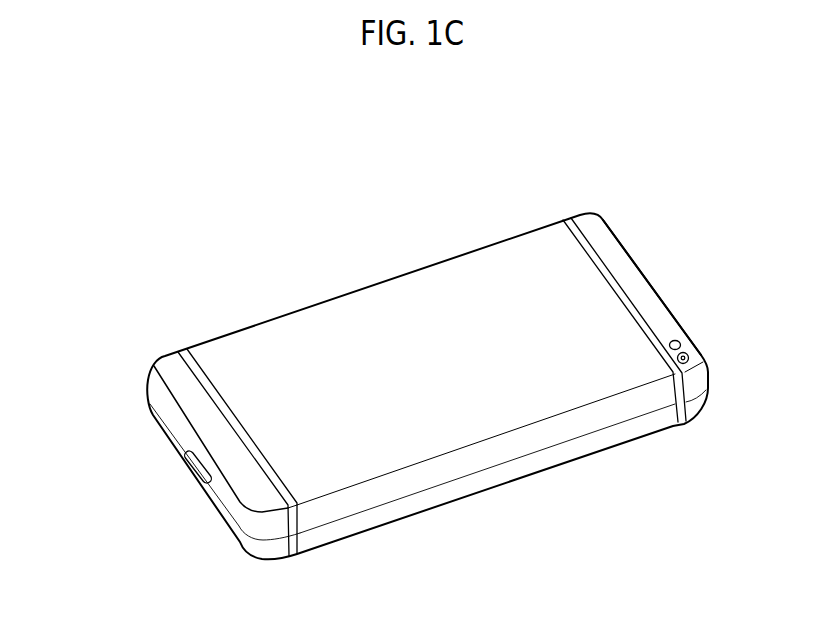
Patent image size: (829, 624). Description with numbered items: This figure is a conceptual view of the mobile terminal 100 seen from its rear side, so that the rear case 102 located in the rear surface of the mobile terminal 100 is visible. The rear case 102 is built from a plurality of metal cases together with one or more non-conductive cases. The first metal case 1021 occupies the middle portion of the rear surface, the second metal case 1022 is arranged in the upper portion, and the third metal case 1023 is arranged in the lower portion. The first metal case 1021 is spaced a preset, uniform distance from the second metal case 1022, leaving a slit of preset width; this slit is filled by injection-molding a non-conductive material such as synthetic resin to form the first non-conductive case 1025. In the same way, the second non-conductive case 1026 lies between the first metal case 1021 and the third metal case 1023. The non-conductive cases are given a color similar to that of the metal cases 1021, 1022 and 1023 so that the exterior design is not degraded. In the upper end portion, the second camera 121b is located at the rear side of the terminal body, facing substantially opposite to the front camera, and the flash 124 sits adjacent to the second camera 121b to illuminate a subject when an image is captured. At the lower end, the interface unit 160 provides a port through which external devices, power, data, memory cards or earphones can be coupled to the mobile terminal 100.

The mobile terminal 100 is at (114, 140).
The rear case 102 is at (558, 158).
The first metal case 1021 is at (301, 322).
The second metal case 1022 is at (623, 266).
The third metal case 1023 is at (168, 358).
The first non-conductive case 1025 is at (563, 221).
The second non-conductive case 1026 is at (182, 350).
The flash 124 is at (681, 343).
The second camera 121b is at (689, 358).
The interface unit 160 is at (185, 470).